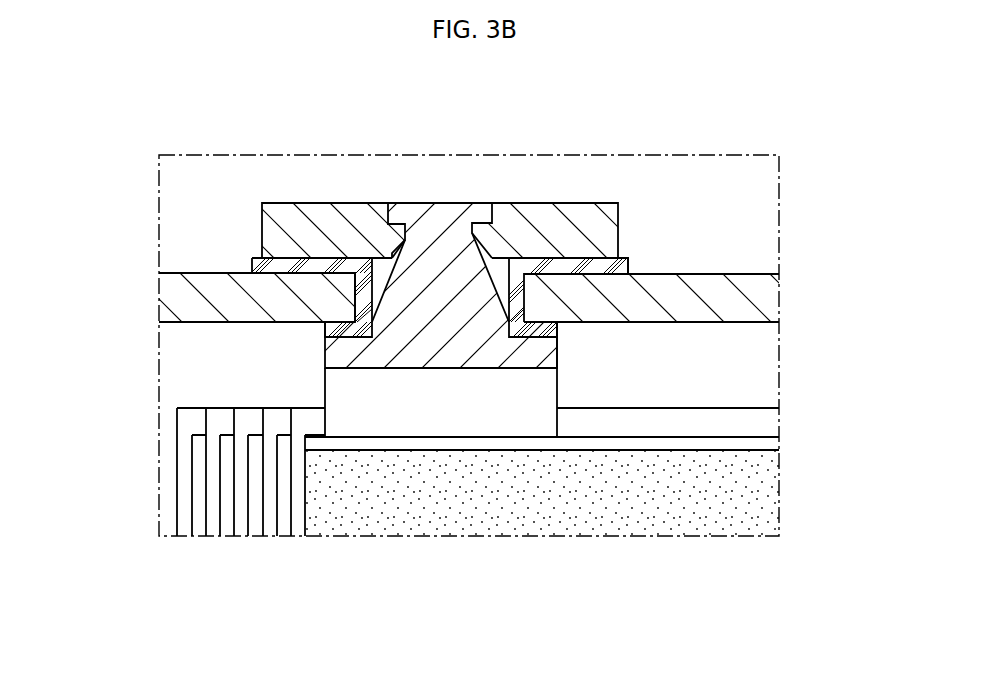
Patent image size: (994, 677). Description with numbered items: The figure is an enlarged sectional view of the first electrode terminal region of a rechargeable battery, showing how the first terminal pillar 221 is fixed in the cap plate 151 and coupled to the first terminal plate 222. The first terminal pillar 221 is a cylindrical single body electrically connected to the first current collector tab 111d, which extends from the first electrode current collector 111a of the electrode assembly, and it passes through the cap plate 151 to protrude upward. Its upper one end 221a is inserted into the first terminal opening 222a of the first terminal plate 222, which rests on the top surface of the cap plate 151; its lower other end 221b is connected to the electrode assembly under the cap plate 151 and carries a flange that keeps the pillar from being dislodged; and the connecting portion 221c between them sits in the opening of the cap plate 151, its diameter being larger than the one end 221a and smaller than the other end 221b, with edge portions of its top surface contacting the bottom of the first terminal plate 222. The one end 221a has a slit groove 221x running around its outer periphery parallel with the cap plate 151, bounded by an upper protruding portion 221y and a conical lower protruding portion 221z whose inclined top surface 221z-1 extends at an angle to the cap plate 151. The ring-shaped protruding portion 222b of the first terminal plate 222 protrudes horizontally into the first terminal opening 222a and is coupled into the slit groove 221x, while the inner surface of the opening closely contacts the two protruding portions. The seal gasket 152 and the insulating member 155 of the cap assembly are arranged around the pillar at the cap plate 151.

The first electrode current collector 111a is at (312, 442).
The first current collector tab 111d is at (383, 388).
The cap plate 151 is at (714, 282).
The seal gasket 152 is at (527, 300).
The insulating member 155 is at (628, 260).
The first terminal pillar 221 is at (476, 354).
The one end of the first terminal pillar 221a is at (478, 331).
The other end of the first terminal pillar 221b is at (627, 465).
The connecting portion 221c is at (265, 405).
The slit groove 221x is at (434, 230).
The upper protruding portion 221y is at (397, 210).
The lower protruding portion 221z is at (347, 203).
The top surface of the lower protruding portion 221z-1 is at (522, 205).
The first terminal plate 222 is at (378, 207).
The first terminal opening 222a is at (363, 300).
The protruding portion 222b is at (487, 235).